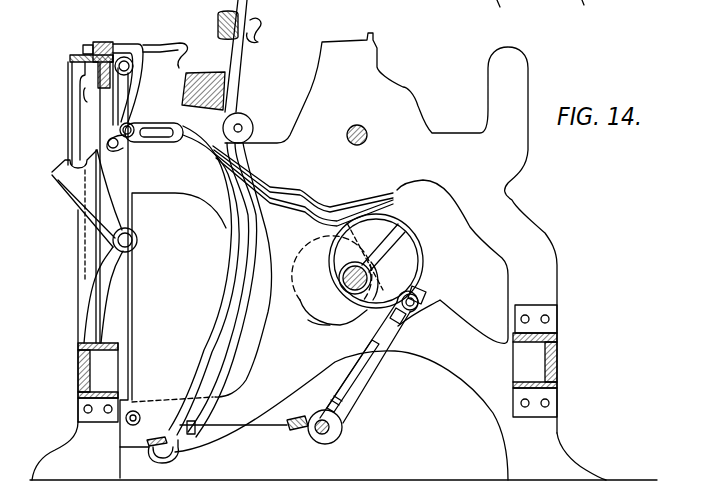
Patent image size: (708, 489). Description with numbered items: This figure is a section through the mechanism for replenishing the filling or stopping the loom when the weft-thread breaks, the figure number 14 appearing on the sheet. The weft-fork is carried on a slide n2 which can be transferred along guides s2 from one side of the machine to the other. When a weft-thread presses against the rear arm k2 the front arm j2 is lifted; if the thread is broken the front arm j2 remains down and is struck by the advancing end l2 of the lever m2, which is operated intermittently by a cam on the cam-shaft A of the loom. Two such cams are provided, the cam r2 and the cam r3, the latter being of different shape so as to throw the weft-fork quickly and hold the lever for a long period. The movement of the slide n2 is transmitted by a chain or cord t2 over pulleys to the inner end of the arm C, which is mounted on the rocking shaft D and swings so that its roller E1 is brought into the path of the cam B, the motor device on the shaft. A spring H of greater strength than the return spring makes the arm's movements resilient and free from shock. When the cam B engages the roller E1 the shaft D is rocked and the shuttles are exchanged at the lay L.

The figure number 14 is at (54, 20).
The slide n2 is at (103, 42).
The front arm j2 is at (127, 57).
The rear arm k2 is at (178, 50).
The guides s2 is at (83, 51).
The lay L is at (224, 73).
The advancing end l2 is at (127, 110).
The chain or cord t2 is at (133, 178).
The lever m2 is at (277, 188).
The cam B is at (304, 250).
The cam-shaft A is at (341, 286).
The cam r2 is at (413, 227).
The cam r3 is at (318, 323).
The arm C is at (425, 298).
The roller E1 is at (438, 303).
The spring H is at (331, 402).
The rocking shaft D is at (334, 436).